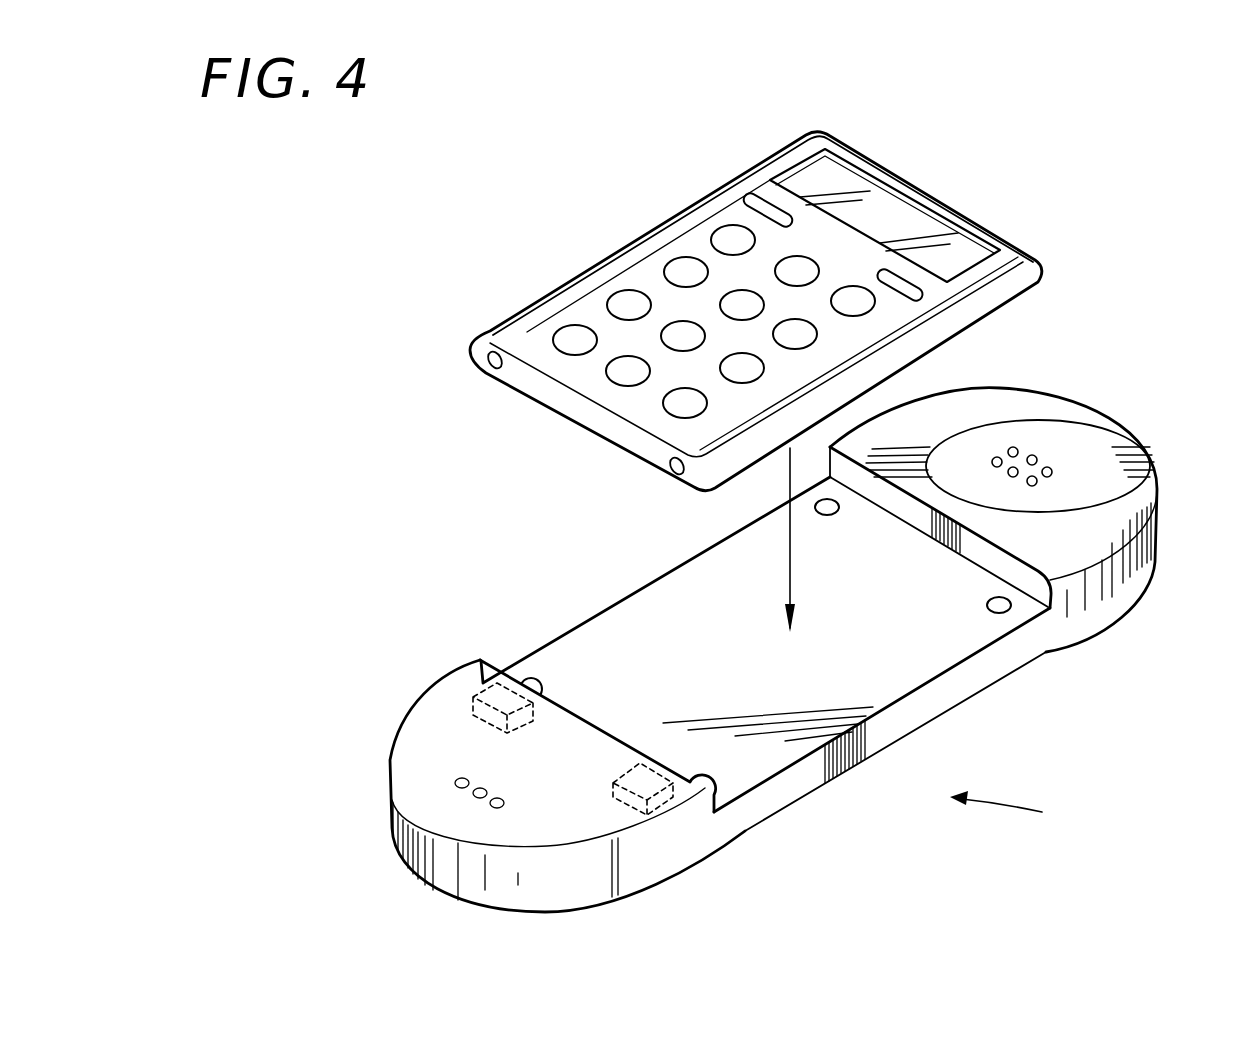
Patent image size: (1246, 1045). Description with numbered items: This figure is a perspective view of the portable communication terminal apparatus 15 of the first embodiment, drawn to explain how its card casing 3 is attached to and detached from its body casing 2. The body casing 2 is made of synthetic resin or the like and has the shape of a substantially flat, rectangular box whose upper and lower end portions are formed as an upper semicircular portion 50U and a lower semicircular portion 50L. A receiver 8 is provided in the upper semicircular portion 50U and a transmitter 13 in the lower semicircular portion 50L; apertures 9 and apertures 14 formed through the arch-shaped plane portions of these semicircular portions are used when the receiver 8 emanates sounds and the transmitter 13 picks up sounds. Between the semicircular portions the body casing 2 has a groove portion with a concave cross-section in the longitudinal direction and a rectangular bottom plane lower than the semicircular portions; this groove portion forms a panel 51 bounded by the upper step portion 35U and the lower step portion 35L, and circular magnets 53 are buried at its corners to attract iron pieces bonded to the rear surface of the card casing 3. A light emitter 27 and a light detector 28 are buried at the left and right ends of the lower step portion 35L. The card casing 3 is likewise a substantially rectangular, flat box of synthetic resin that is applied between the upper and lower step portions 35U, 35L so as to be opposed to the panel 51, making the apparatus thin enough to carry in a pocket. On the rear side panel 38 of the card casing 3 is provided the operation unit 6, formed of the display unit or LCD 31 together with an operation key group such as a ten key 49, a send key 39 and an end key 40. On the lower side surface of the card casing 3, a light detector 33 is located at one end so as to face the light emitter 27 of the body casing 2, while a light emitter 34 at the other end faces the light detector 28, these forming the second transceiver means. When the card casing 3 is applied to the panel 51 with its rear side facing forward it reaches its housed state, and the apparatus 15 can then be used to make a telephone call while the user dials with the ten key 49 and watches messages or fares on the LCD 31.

The body casing 2 is at (1115, 580).
The card casing 3 is at (1030, 270).
The operation unit 6 is at (613, 267).
The receiver 8 is at (1090, 455).
The apertures 9 is at (1038, 457).
The transmitter 13 is at (447, 797).
The apertures 14 is at (480, 788).
The portable communication terminal apparatus 15 is at (1097, 856).
The light emitter 27 is at (488, 692).
The light detector 28 is at (667, 793).
The display unit (LCD) 31 is at (908, 220).
The light detector 33 is at (480, 372).
The light emitter 34 is at (663, 470).
The lower step portion 35L is at (573, 703).
The upper step portion 35U is at (878, 492).
The rear side panel 38 is at (683, 212).
The send key 39 is at (758, 197).
The end key 40 is at (920, 282).
The ten key 49 is at (607, 300).
The lower semicircular portion 50L is at (490, 822).
The upper semicircular portion 50U is at (1130, 497).
The panel 51 is at (630, 612).
The circular magnets 53 is at (1008, 612).